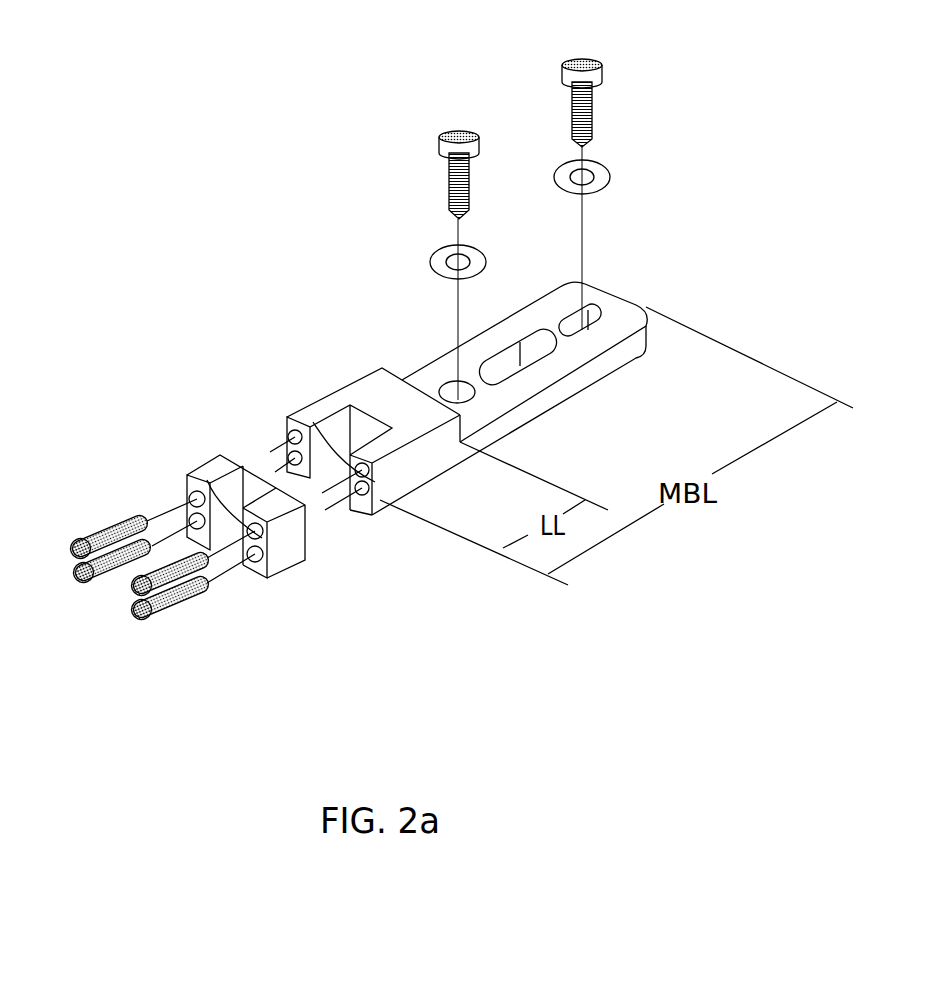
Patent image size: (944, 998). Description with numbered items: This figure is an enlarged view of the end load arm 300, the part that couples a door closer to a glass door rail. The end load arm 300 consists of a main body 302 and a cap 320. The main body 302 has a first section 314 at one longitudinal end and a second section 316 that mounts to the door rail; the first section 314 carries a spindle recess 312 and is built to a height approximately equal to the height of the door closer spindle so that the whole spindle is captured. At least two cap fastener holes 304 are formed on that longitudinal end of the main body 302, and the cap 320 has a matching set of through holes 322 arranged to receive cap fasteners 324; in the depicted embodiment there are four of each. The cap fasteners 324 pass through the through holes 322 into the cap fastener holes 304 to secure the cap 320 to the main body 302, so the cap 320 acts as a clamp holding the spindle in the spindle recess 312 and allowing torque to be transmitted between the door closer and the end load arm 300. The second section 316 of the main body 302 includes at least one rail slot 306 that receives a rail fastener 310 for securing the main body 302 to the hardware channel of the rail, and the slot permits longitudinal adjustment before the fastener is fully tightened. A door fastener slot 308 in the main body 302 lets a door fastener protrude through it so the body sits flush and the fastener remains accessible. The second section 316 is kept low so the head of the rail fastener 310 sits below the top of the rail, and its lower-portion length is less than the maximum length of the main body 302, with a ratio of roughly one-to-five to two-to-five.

The end load arm 300 is at (207, 326).
The main body 302 is at (649, 322).
The cap fastener holes 304 is at (290, 414).
The rail slot 306 is at (453, 382).
The door fastener slot 308 is at (528, 368).
The rail fastener 310 is at (563, 70).
The spindle recess 312 is at (362, 435).
The first section 314 is at (412, 465).
The second section 316 is at (587, 373).
The cap 320 is at (282, 574).
The through holes 322 is at (207, 480).
The cap fasteners 324 is at (93, 572).